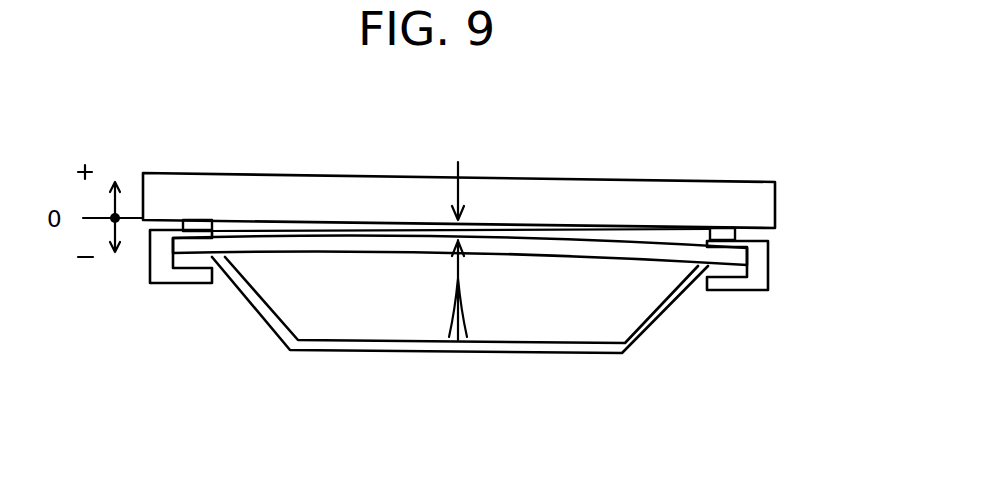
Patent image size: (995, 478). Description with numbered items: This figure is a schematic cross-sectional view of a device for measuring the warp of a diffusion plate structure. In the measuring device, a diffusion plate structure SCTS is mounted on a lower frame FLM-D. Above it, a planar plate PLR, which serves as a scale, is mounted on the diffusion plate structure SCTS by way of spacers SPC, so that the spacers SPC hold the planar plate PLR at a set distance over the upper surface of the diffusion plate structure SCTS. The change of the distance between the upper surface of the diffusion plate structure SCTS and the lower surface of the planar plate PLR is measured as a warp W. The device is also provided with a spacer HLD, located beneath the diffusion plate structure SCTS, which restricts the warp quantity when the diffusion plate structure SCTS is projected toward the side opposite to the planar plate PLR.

The planar plate PLR is at (663, 208).
The spacers SPC is at (728, 230).
The diffusion plate structure SCTS is at (282, 248).
The spacer HLD is at (466, 335).
The lower frame FLM-D is at (637, 343).
The warp W is at (498, 162).